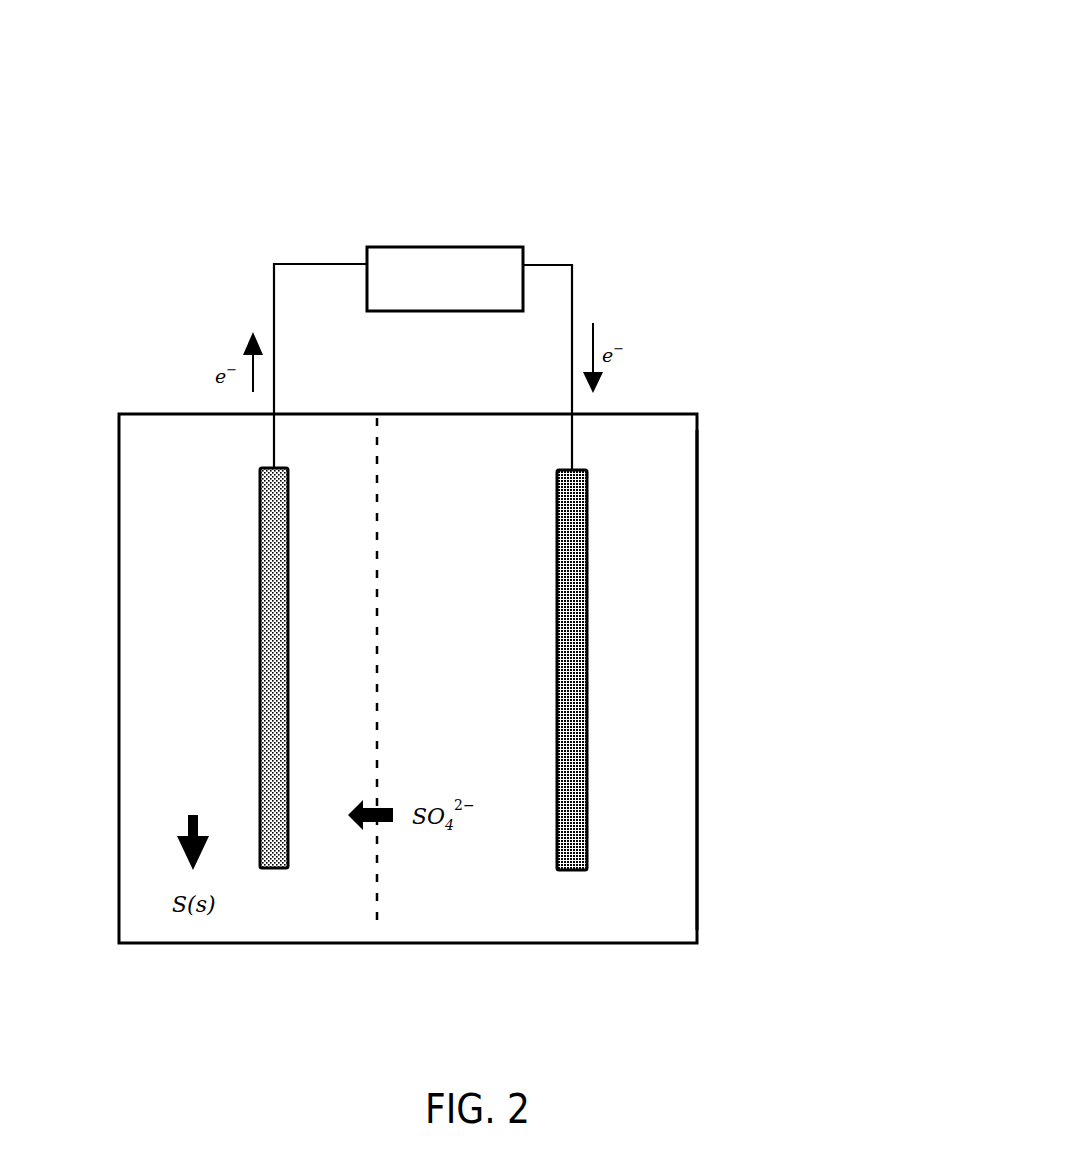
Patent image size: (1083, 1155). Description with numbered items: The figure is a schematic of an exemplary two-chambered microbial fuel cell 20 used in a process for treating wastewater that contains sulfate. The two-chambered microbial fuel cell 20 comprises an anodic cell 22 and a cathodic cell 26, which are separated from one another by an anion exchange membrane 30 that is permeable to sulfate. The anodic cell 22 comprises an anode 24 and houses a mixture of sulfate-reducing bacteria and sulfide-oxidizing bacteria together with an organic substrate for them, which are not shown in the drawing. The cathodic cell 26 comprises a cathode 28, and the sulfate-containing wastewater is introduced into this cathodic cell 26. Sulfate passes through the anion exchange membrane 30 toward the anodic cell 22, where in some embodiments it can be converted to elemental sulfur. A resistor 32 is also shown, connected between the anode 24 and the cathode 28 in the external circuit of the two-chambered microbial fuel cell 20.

The two-chambered microbial fuel cell 20 is at (818, 136).
The anodic cell 22 is at (118, 603).
The anode 24 is at (263, 548).
The cathodic cell 26 is at (698, 524).
The cathode 28 is at (576, 782).
The anion exchange membrane 30 is at (377, 930).
The resistor 32 is at (468, 247).